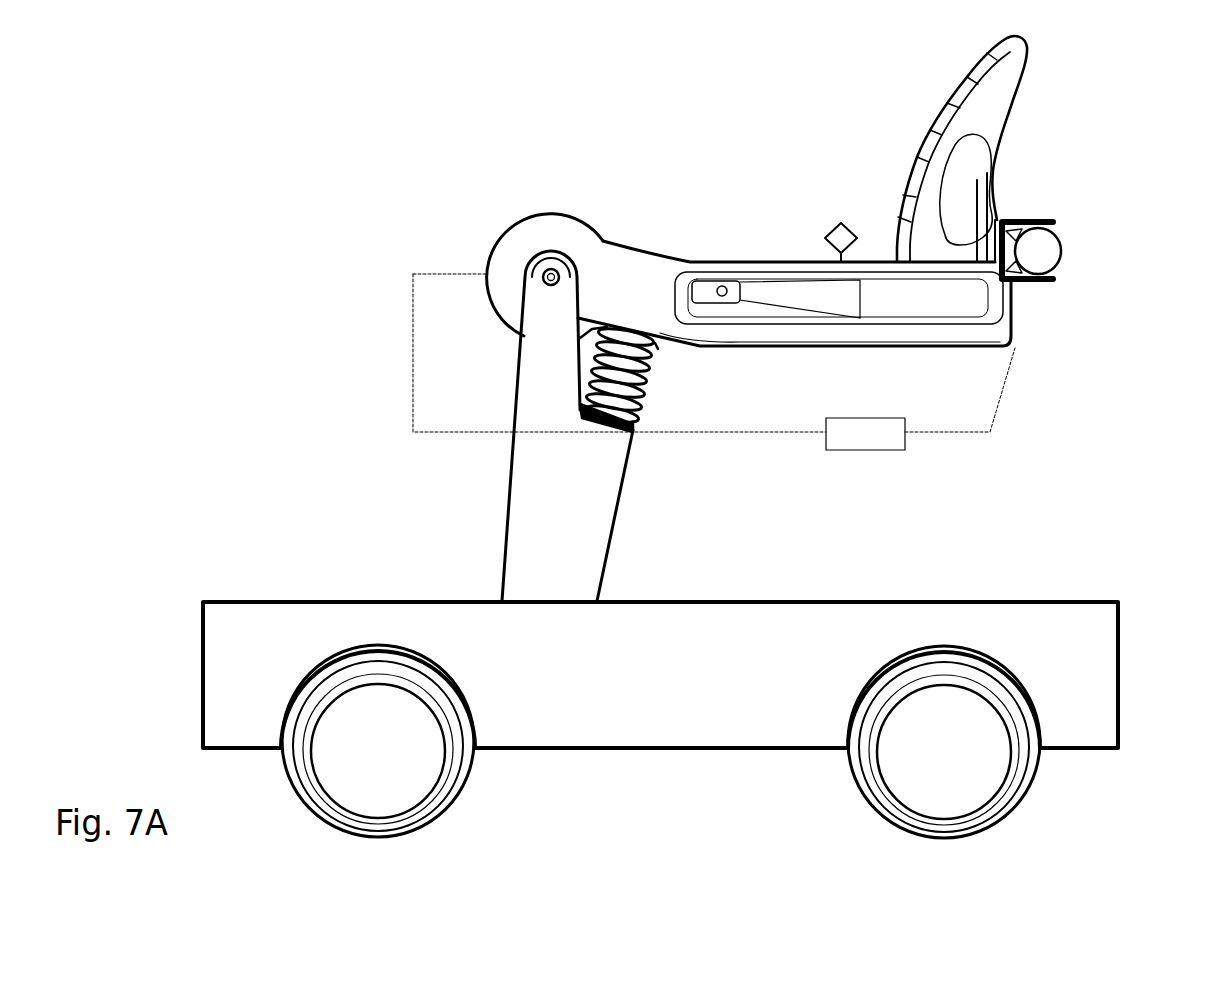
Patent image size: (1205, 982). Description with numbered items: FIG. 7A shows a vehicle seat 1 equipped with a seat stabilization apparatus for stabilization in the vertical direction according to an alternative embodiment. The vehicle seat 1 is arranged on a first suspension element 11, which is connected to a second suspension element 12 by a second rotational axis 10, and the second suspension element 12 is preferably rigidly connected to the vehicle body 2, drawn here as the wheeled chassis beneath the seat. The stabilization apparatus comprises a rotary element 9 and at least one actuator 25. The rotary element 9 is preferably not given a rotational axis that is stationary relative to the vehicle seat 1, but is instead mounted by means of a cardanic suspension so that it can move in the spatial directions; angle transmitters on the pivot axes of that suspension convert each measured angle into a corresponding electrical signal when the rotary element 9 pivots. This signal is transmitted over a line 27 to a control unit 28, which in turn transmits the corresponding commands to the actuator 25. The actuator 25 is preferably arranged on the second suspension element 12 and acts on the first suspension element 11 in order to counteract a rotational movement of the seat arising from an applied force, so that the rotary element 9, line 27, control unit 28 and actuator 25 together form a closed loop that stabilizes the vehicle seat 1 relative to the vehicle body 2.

The vehicle seat 1 is at (883, 136).
The vehicle body 2 is at (1090, 650).
The rotary element 9 is at (1060, 251).
The second rotational axis 10 is at (551, 268).
The first suspension element 11 is at (640, 283).
The second suspension element 12 is at (521, 547).
The actuator 25 is at (507, 241).
The line 27 is at (997, 413).
The control unit 28 is at (890, 450).